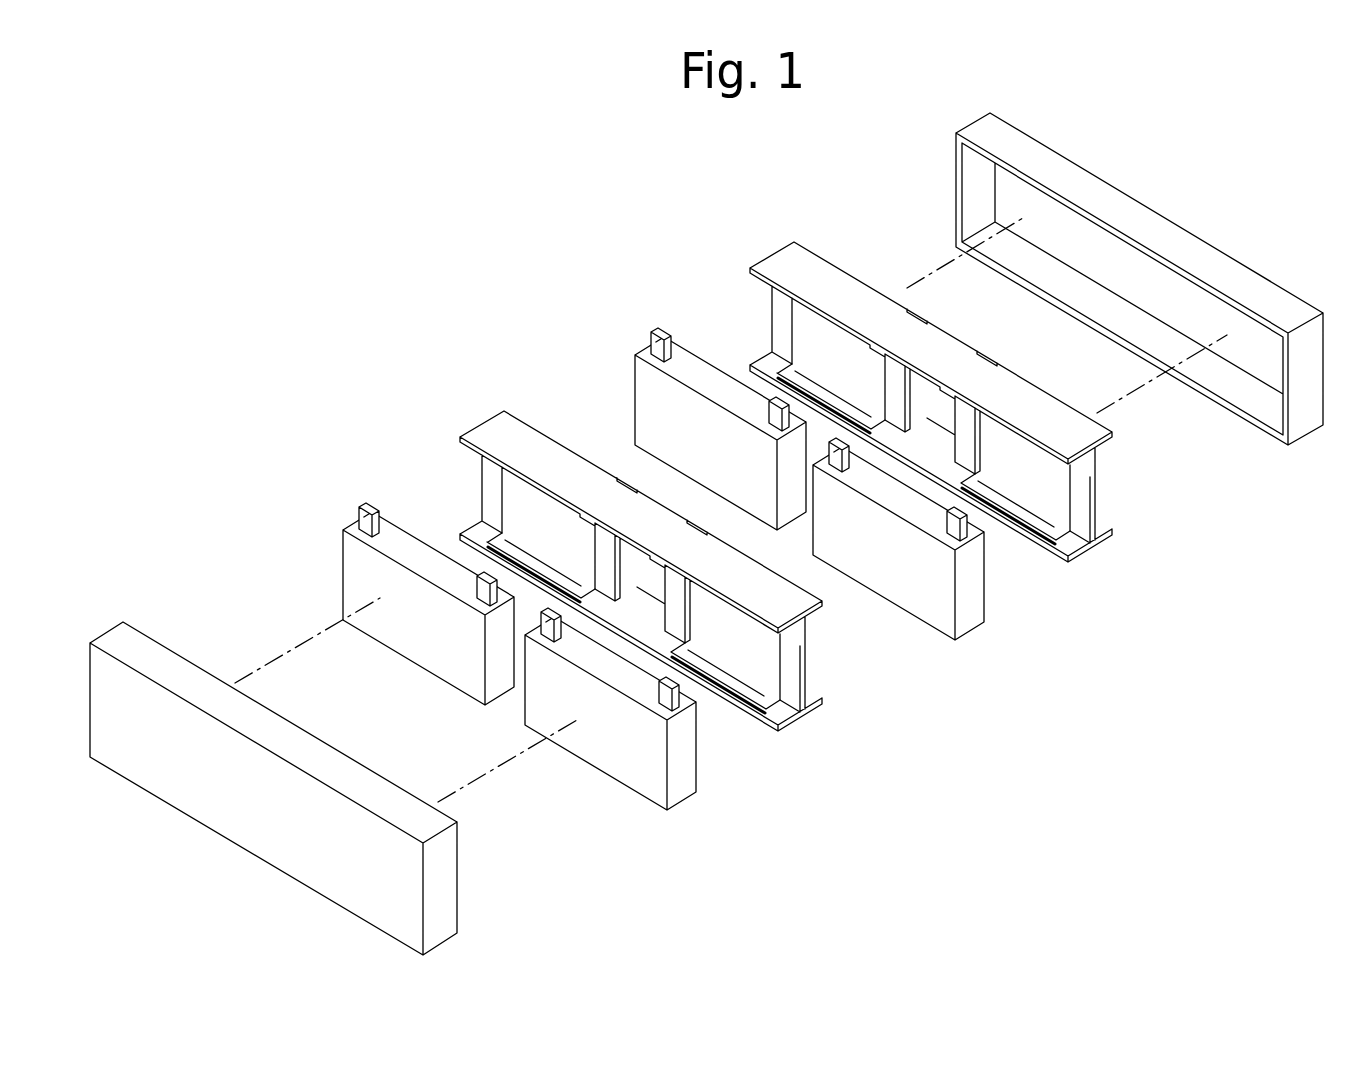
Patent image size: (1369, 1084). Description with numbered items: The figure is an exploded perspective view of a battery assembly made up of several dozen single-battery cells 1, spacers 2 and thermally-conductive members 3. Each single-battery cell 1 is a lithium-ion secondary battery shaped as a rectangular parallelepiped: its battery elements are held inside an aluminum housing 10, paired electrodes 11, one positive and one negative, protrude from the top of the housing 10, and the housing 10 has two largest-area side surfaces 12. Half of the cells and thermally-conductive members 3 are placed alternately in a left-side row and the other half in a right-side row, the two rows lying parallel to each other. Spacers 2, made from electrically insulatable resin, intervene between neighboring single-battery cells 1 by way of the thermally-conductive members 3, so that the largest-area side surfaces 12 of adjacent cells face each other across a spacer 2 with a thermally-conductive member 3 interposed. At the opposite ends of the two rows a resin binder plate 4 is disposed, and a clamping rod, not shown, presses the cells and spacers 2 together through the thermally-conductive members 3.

The single-battery cell 1 is at (368, 577).
The spacer 2 is at (532, 447).
The thermally-conductive member 3 is at (538, 503).
The binder plate 4 is at (305, 745).
The housing 10 is at (933, 597).
The paired electrodes 11 is at (478, 576).
The largest-area side surface 12 is at (612, 745).